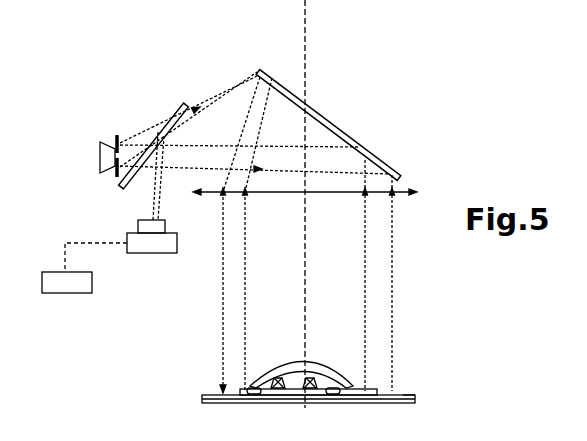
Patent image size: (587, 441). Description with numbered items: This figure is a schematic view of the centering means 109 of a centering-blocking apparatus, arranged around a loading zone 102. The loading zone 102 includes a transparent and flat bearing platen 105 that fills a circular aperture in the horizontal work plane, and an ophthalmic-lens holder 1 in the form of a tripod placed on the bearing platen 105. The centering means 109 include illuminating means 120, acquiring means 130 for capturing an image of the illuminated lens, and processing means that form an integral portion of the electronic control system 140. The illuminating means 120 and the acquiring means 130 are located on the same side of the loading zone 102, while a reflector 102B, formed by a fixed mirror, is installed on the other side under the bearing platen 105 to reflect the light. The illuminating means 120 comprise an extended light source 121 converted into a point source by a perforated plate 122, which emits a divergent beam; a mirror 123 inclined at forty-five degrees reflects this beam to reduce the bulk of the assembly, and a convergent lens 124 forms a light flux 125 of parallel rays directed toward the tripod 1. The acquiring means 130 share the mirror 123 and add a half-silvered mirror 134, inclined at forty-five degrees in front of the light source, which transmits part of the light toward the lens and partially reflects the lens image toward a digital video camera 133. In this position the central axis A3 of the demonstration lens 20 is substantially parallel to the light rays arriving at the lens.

The ophthalmic-lens holder 1 is at (341, 372).
The demonstration lens 20 is at (265, 380).
The loading zone 102 is at (184, 405).
The reflector 102B is at (404, 394).
The bearing platen 105 is at (371, 388).
The centering means 109 is at (346, 70).
The illuminating means 120 is at (104, 57).
The extended light source 121 is at (100, 165).
The perforated plate 122 is at (116, 140).
The mirror 123 is at (333, 118).
The convergent lens 124 is at (262, 196).
The light flux 125 is at (390, 273).
The acquiring means 130 is at (188, 226).
The digital video camera 133 is at (153, 253).
The half-silvered mirror 134 is at (180, 104).
The electronic control system 140 is at (80, 293).
The central axis A3 is at (305, 42).